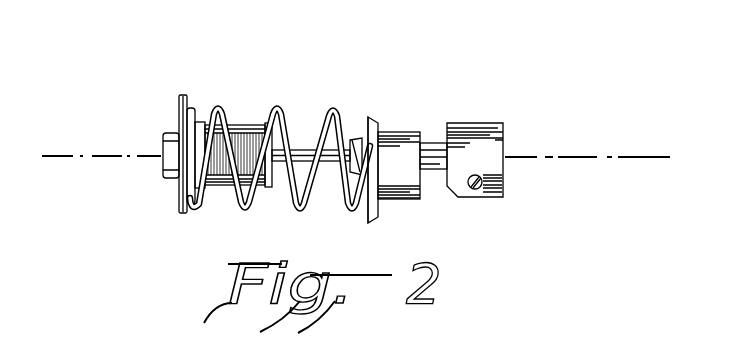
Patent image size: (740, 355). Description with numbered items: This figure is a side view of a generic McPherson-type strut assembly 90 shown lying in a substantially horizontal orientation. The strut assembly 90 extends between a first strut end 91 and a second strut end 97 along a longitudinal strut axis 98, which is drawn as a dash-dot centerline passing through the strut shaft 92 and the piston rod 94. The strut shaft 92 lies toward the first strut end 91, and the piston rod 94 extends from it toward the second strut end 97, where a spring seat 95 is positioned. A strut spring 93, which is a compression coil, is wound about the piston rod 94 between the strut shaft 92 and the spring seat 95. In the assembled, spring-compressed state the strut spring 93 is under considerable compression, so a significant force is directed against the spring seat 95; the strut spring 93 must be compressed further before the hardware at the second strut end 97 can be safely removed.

The McPherson-type strut assembly 90 is at (356, 130).
The first strut end 91 is at (480, 143).
The strut shaft 92 is at (433, 143).
The strut spring 93 is at (333, 112).
The piston rod 94 is at (302, 150).
The spring seat 95 is at (178, 118).
The second strut end 97 is at (162, 146).
The longitudinal strut axis 98 is at (593, 157).